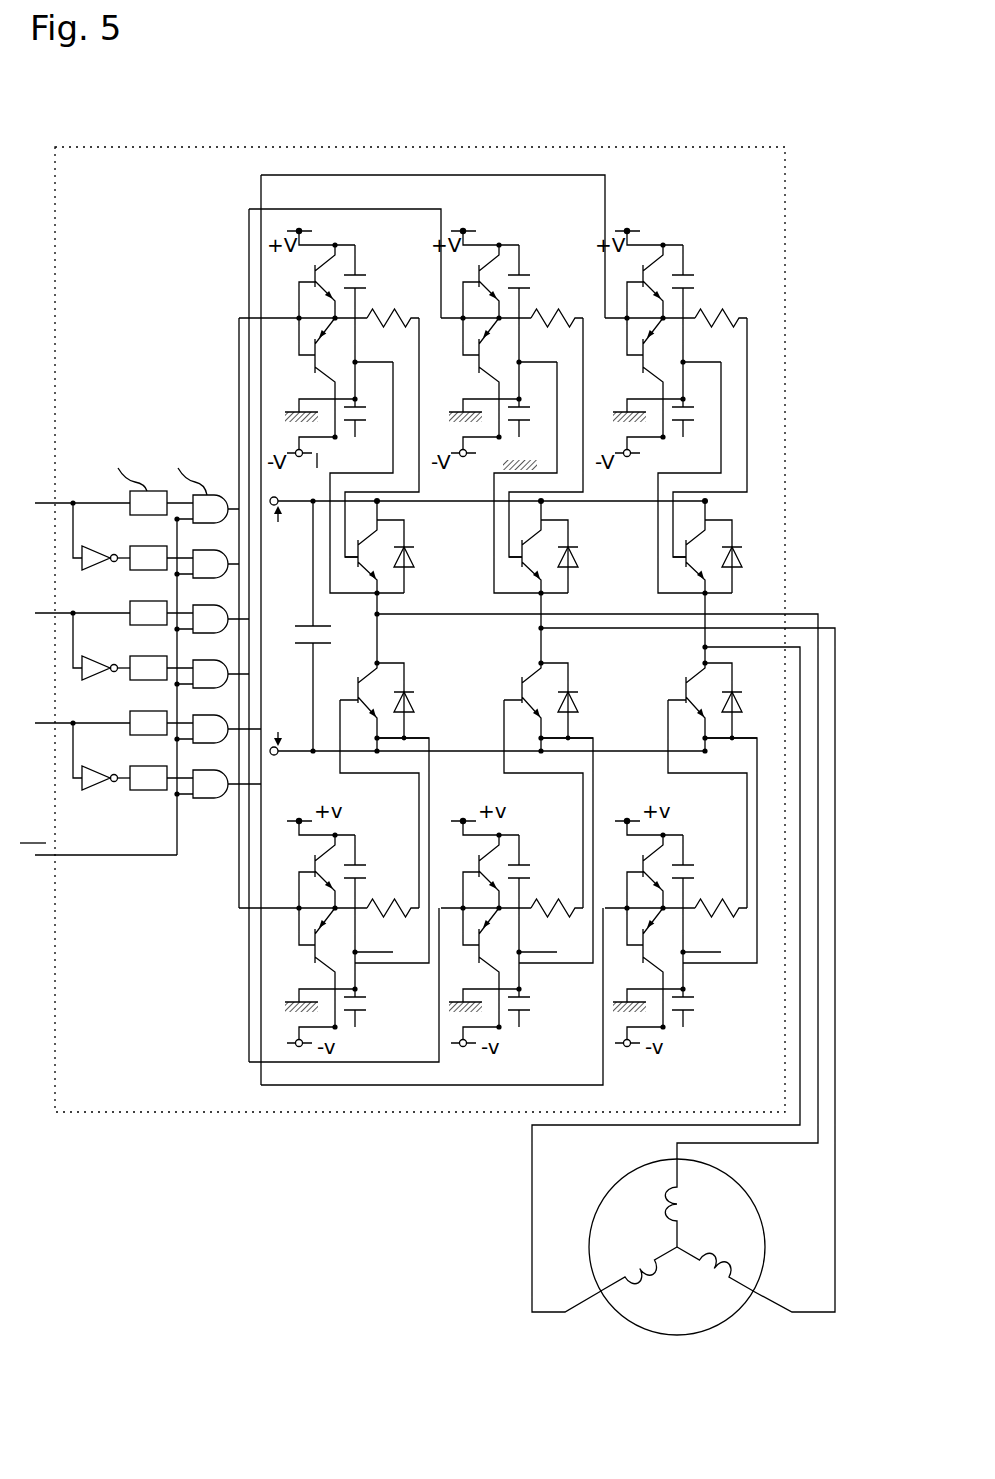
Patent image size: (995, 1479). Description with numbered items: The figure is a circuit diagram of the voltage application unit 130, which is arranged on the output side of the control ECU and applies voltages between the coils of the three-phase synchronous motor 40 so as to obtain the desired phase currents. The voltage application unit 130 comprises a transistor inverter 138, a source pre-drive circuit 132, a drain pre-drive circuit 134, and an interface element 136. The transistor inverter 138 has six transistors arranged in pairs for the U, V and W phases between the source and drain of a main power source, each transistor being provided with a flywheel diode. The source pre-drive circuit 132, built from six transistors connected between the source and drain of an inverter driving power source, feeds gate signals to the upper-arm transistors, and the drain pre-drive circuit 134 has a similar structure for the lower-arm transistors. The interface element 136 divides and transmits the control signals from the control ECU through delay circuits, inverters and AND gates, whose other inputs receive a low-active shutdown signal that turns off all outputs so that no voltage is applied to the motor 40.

The voltage application unit 130 is at (331, 147).
The source pre-drive circuit 132 is at (716, 228).
The drain pre-drive circuit 134 is at (228, 992).
The interface element 136 is at (159, 432).
The transistor inverter 138 is at (770, 590).
The three-phase synchronous motor 40 is at (605, 1188).